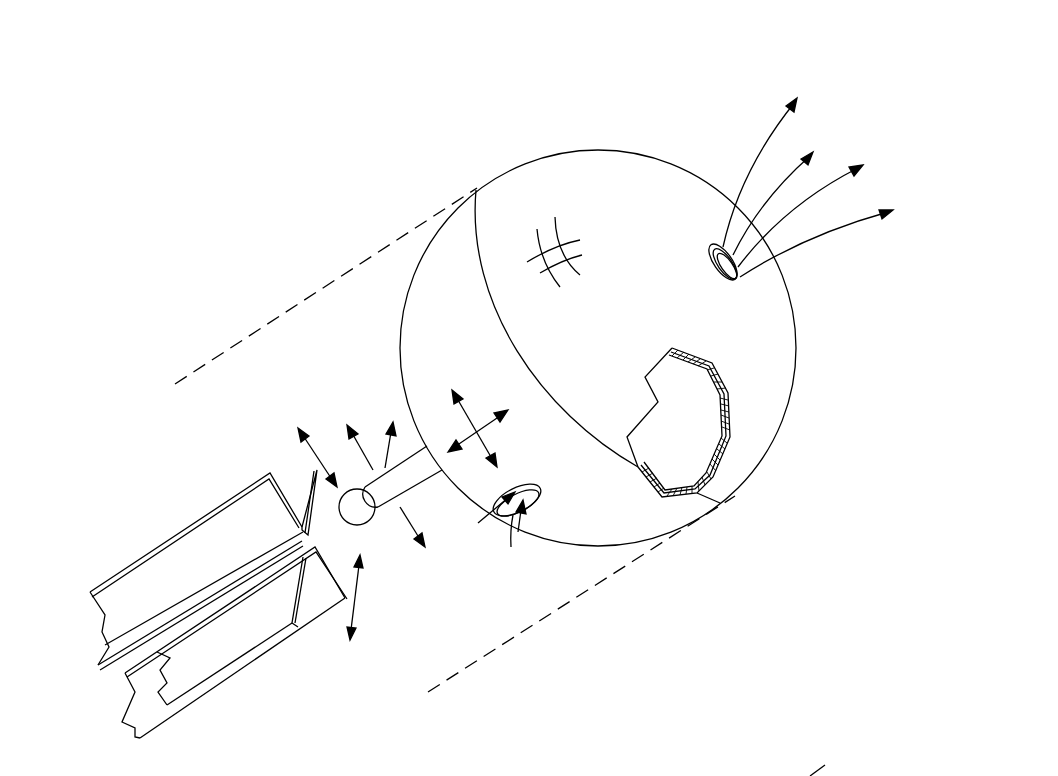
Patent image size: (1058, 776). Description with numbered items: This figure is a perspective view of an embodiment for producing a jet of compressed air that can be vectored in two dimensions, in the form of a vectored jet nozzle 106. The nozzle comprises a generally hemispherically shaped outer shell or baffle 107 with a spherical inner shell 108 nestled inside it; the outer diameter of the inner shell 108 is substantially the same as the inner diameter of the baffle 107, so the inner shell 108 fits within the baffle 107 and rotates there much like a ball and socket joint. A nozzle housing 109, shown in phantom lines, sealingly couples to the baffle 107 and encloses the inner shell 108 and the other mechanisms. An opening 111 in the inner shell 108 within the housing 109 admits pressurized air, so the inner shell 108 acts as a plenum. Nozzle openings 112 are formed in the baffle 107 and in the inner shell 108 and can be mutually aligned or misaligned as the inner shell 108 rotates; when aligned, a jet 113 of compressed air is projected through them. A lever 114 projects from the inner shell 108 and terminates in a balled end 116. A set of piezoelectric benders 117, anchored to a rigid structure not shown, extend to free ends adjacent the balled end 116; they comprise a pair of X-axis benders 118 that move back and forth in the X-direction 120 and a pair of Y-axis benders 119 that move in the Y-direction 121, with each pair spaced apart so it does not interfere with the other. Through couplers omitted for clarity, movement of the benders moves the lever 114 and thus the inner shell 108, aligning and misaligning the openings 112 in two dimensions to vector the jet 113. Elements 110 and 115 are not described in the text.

The vectored jet nozzle 106 is at (397, 166).
The outer shell or baffle 107 is at (597, 173).
The inner shell 108 is at (437, 294).
The nozzle housing 109 is at (287, 313).
The irregular opening in body 110 is at (678, 422).
The opening 111 is at (526, 514).
The nozzle openings 112 is at (745, 280).
The jet 113 is at (763, 138).
The lever 114 is at (440, 507).
The shaft 115 is at (387, 500).
The balled end 116 is at (363, 516).
The piezoelectric benders 117 is at (152, 523).
The X-axis benders 118 is at (252, 510).
The Y-axis benders 119 is at (295, 488).
The X-direction 120 is at (355, 602).
The Y-direction 121 is at (324, 448).